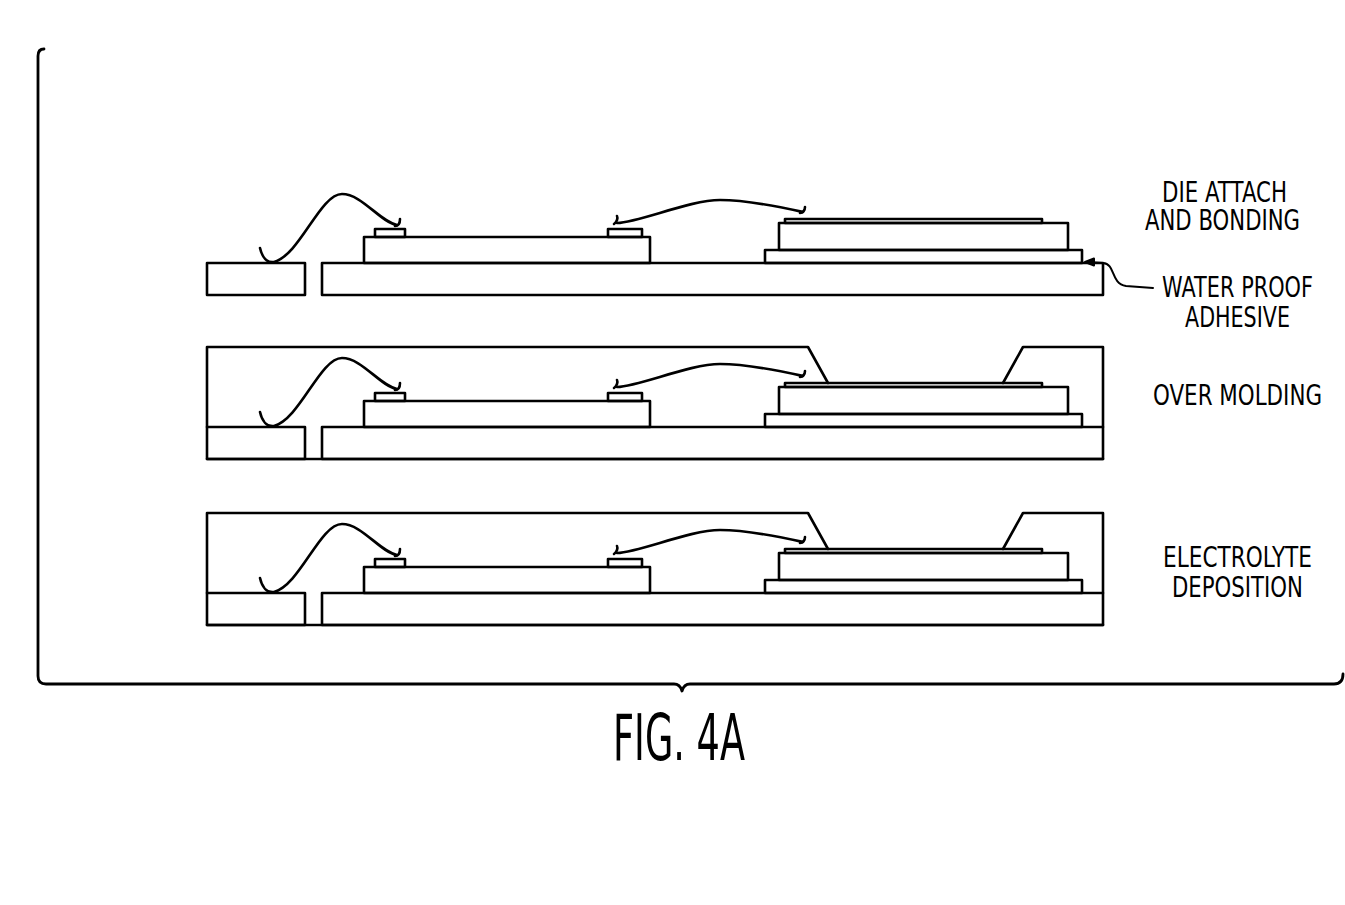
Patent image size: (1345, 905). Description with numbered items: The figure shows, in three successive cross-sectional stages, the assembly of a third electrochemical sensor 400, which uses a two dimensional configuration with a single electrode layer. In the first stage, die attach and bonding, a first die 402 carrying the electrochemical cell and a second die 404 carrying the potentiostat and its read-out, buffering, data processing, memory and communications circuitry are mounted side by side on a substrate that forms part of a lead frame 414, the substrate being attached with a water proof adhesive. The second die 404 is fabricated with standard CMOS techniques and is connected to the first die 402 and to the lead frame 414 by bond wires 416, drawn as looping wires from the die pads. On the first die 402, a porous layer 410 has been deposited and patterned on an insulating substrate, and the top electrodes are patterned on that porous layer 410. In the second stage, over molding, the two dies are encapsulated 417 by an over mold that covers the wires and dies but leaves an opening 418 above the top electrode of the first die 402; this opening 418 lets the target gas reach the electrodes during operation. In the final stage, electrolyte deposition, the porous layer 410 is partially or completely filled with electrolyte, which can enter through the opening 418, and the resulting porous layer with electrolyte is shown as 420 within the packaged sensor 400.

The third electrochemical sensor 400 is at (126, 176).
The first die 402 is at (941, 174).
The second die 404 is at (473, 202).
The porous layer 410 is at (1052, 235).
The lead frame 414 is at (217, 277).
The bond wires 416 is at (312, 215).
The encapsulation 417 is at (1092, 368).
The opening 418 is at (936, 360).
The porous layer with electrolyte 420 is at (1050, 567).